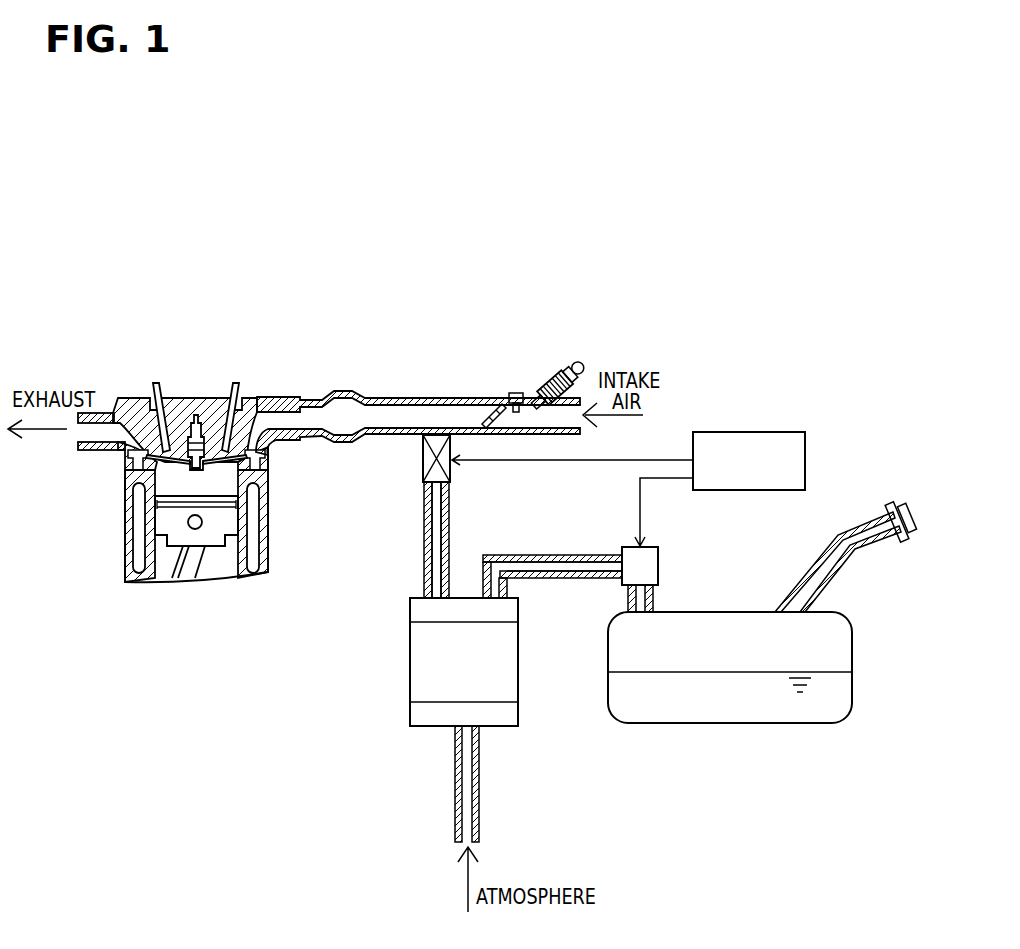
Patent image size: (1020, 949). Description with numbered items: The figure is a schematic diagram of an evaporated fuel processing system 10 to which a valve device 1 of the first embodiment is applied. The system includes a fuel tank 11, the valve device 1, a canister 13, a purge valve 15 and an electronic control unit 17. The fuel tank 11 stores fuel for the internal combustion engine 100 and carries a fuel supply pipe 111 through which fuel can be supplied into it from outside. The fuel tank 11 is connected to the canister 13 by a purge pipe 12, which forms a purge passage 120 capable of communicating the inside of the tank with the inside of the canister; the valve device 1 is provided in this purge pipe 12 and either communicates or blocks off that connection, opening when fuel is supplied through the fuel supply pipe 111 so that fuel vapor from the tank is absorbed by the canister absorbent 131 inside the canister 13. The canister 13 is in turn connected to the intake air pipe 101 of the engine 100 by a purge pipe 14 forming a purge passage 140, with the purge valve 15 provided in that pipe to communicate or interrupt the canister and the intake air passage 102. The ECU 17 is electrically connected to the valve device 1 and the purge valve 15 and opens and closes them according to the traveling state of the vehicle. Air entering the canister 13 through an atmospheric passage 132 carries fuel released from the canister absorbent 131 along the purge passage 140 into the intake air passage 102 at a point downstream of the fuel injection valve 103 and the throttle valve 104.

The valve device 1 is at (632, 556).
The evaporated fuel processing system 10 is at (719, 365).
The fuel tank 11 is at (852, 656).
The fuel supply pipe 111 is at (796, 582).
The purge pipe 12 is at (560, 556).
The purge passage 120 is at (598, 572).
The canister 13 is at (519, 630).
The canister absorbent 131 is at (492, 685).
The atmospheric passage 132 is at (465, 782).
The purge pipe 14 is at (445, 546).
The purge passage 140 is at (437, 518).
The purge valve 15 is at (422, 458).
The electronic control unit 17 is at (806, 452).
The internal combustion engine 100 is at (126, 534).
The intake air pipe 101 is at (437, 400).
The intake air passage 102 is at (390, 412).
The fuel injection valve 103 is at (568, 371).
The throttle valve 104 is at (508, 395).